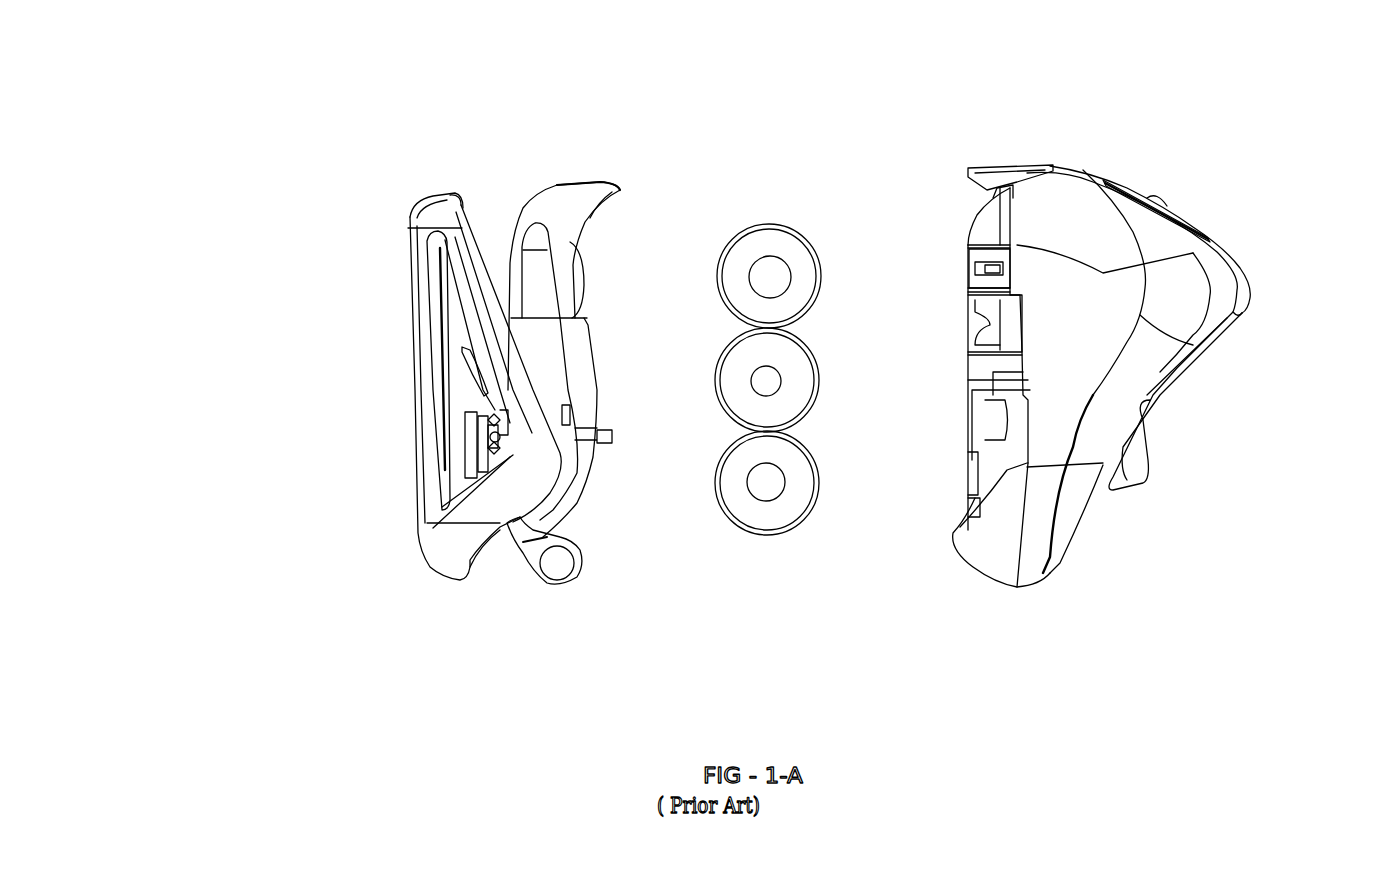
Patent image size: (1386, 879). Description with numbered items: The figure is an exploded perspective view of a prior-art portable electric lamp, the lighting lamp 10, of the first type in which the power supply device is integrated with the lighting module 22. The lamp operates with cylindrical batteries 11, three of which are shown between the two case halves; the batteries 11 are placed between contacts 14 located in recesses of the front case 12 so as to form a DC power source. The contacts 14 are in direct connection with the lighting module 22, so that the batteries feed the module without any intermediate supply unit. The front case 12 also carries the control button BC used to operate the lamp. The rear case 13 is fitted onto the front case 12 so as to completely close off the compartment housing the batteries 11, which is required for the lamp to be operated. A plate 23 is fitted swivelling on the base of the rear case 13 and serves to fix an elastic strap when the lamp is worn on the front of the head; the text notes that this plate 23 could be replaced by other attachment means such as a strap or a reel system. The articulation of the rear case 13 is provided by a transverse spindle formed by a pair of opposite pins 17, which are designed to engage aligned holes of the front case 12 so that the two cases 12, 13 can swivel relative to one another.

The lighting lamp 10 is at (1102, 359).
The cylindrical batteries 11 is at (772, 240).
The front case 12 is at (1197, 275).
The rear case 13 is at (550, 203).
The contacts 14 is at (968, 455).
The pins 17 is at (560, 563).
The lighting module 22 is at (1177, 380).
The plate 23 is at (428, 223).
The control button BC is at (1162, 203).